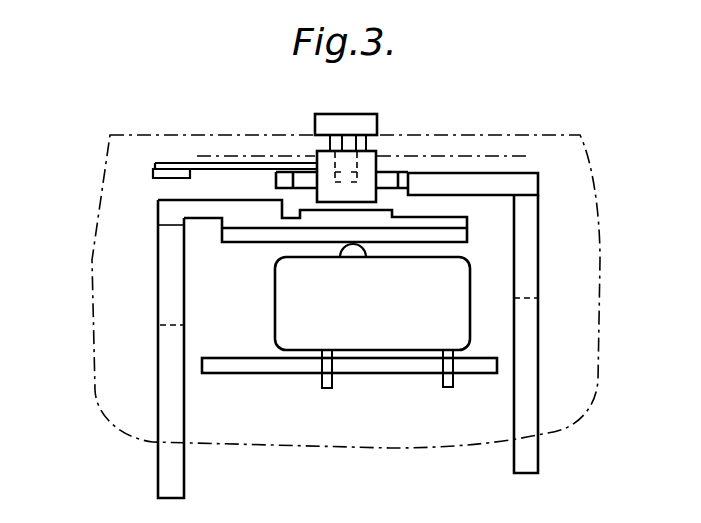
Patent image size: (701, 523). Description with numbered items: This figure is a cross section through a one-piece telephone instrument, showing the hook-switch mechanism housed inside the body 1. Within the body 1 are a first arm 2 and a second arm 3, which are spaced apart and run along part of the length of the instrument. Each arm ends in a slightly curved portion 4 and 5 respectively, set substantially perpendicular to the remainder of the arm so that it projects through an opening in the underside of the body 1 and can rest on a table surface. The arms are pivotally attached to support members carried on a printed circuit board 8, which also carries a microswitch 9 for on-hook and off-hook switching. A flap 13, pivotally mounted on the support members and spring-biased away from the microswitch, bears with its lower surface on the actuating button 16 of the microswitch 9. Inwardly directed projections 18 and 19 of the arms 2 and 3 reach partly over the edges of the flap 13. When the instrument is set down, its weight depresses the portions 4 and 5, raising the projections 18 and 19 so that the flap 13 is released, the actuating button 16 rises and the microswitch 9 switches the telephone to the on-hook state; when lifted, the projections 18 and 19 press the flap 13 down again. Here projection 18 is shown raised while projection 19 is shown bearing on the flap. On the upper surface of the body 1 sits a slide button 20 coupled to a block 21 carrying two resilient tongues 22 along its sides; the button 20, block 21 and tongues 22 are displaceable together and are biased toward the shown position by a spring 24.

The body 1 is at (593, 428).
The first arm 2 is at (530, 258).
The second arm 3 is at (163, 265).
The curved portion 4 is at (533, 390).
The curved portion 5 is at (163, 393).
The printed circuit board 8 is at (372, 366).
The microswitch 9 is at (432, 313).
The flap 13 is at (262, 234).
The actuating button 16 is at (345, 262).
The projection 18 is at (487, 182).
The projection 19 is at (207, 212).
The slide button 20 is at (368, 123).
The block 21 is at (366, 171).
The resilient tongues 22 is at (283, 172).
The spring 24 is at (157, 168).